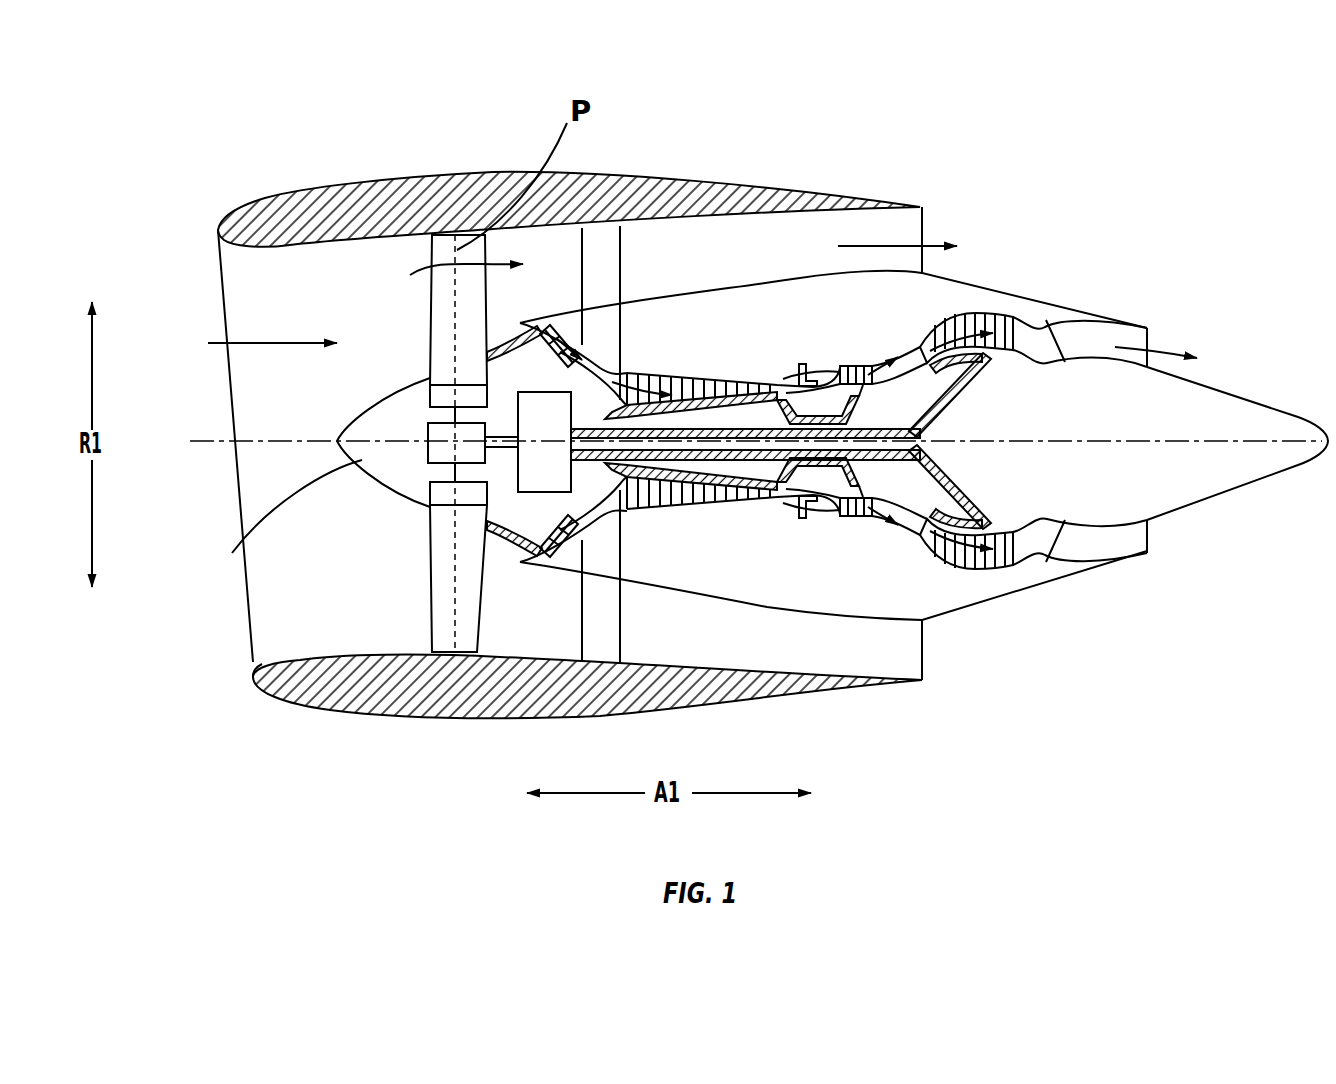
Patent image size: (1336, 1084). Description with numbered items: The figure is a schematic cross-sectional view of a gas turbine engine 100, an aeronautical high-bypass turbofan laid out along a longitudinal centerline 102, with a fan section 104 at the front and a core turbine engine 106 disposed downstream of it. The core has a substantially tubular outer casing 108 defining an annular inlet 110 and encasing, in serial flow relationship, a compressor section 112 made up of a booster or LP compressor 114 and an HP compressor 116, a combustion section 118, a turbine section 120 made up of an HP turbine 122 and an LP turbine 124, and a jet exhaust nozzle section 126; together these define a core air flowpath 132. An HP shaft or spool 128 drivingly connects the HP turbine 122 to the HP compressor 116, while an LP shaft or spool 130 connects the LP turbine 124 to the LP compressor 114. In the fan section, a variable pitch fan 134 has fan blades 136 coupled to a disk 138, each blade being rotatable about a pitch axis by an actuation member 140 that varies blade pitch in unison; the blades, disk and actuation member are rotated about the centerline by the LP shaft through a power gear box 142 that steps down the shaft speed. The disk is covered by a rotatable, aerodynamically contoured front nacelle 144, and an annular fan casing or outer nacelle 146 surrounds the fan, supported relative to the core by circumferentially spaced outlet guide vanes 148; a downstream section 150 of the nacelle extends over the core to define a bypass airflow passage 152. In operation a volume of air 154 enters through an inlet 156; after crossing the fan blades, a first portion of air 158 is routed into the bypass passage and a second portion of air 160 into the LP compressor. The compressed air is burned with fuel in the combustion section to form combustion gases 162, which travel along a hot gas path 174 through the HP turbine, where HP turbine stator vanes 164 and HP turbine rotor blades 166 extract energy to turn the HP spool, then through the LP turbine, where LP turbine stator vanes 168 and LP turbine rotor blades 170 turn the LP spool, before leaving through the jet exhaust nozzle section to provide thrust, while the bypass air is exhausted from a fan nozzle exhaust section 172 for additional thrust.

The gas turbine engine 100 is at (1066, 188).
The longitudinal centerline 102 is at (1088, 440).
The fan section 104 is at (473, 140).
The core turbine engine 106 is at (790, 340).
The outer casing 108 is at (780, 606).
The annular inlet 110 is at (527, 548).
The compressor section 112 is at (662, 372).
The LP compressor 114 is at (590, 522).
The HP compressor 116 is at (650, 497).
The combustion section 118 is at (822, 516).
The turbine section 120 is at (888, 348).
The HP turbine 122 is at (945, 503).
The LP turbine 124 is at (1003, 568).
The jet exhaust nozzle section 126 is at (1067, 555).
The HP shaft or spool 128 is at (860, 413).
The LP shaft or spool 130 is at (947, 408).
The core air flowpath 132 is at (897, 537).
The variable pitch fan 134 is at (393, 500).
The fan blades 136 is at (427, 593).
The disk 138 is at (447, 398).
The actuation member 140 is at (428, 427).
The power gear box 142 is at (560, 417).
The front nacelle 144 is at (279, 520).
The outer nacelle 146 is at (473, 717).
The outlet guide vanes 148 is at (622, 256).
The downstream section 150 is at (848, 194).
The bypass airflow passage 152 is at (753, 270).
The volume of air 154 is at (268, 340).
The inlet 156 is at (253, 662).
The first portion of air 158 is at (410, 275).
The second portion of air 160 is at (506, 335).
The combustion gases 162 is at (866, 365).
The HP turbine stator vanes 164 is at (836, 514).
The HP turbine rotor blades 166 is at (938, 470).
The LP turbine stator vanes 168 is at (930, 555).
The LP turbine rotor blades 170 is at (940, 573).
The fan nozzle exhaust section 172 is at (910, 231).
The hot gas path 174 is at (908, 350).